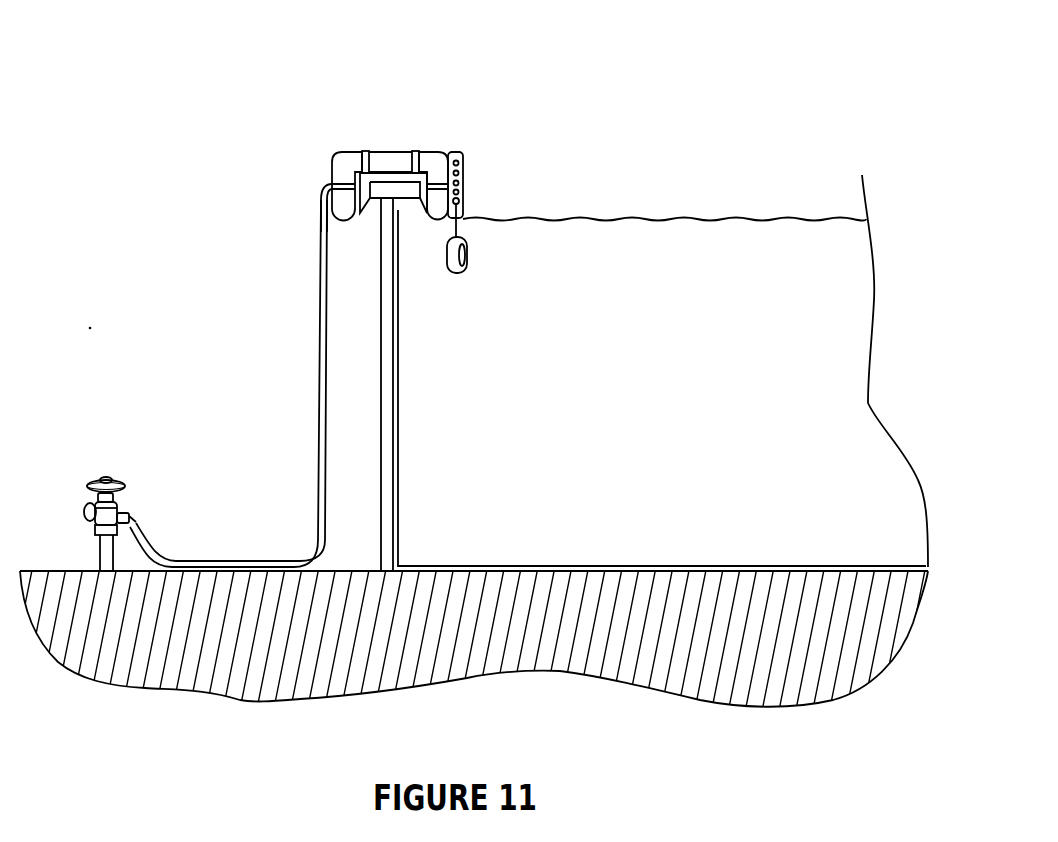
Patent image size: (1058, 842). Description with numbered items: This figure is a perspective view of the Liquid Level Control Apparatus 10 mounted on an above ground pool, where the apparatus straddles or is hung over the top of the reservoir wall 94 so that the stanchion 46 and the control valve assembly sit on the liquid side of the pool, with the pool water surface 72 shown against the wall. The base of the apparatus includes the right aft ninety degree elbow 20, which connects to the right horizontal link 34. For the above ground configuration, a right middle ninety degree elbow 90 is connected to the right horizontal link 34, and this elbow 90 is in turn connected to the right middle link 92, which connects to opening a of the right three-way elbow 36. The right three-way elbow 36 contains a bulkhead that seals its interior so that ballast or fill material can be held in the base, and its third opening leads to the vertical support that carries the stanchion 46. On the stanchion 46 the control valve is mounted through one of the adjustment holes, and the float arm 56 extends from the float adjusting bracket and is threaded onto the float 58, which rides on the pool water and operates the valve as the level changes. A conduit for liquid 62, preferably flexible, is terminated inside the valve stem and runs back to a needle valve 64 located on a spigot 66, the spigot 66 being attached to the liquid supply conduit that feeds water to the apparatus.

The Liquid Level Control Apparatus 10 is at (421, 118).
The right aft 90 degree elbow 20 is at (320, 203).
The right horizontal link 34 is at (330, 184).
The right 3-way elbow 36 is at (438, 151).
The stanchion 46 is at (464, 151).
The float arm 56 is at (460, 222).
The float 58 is at (461, 275).
The conduit for liquid 62 is at (319, 418).
The needle valve 64 is at (127, 518).
The spigot 66 is at (107, 477).
The pool wall / water level 72 is at (677, 218).
The right middle 90 degree elbow 90 is at (346, 152).
The right middle link 92 is at (381, 150).
The reservoir wall 94 is at (380, 245).